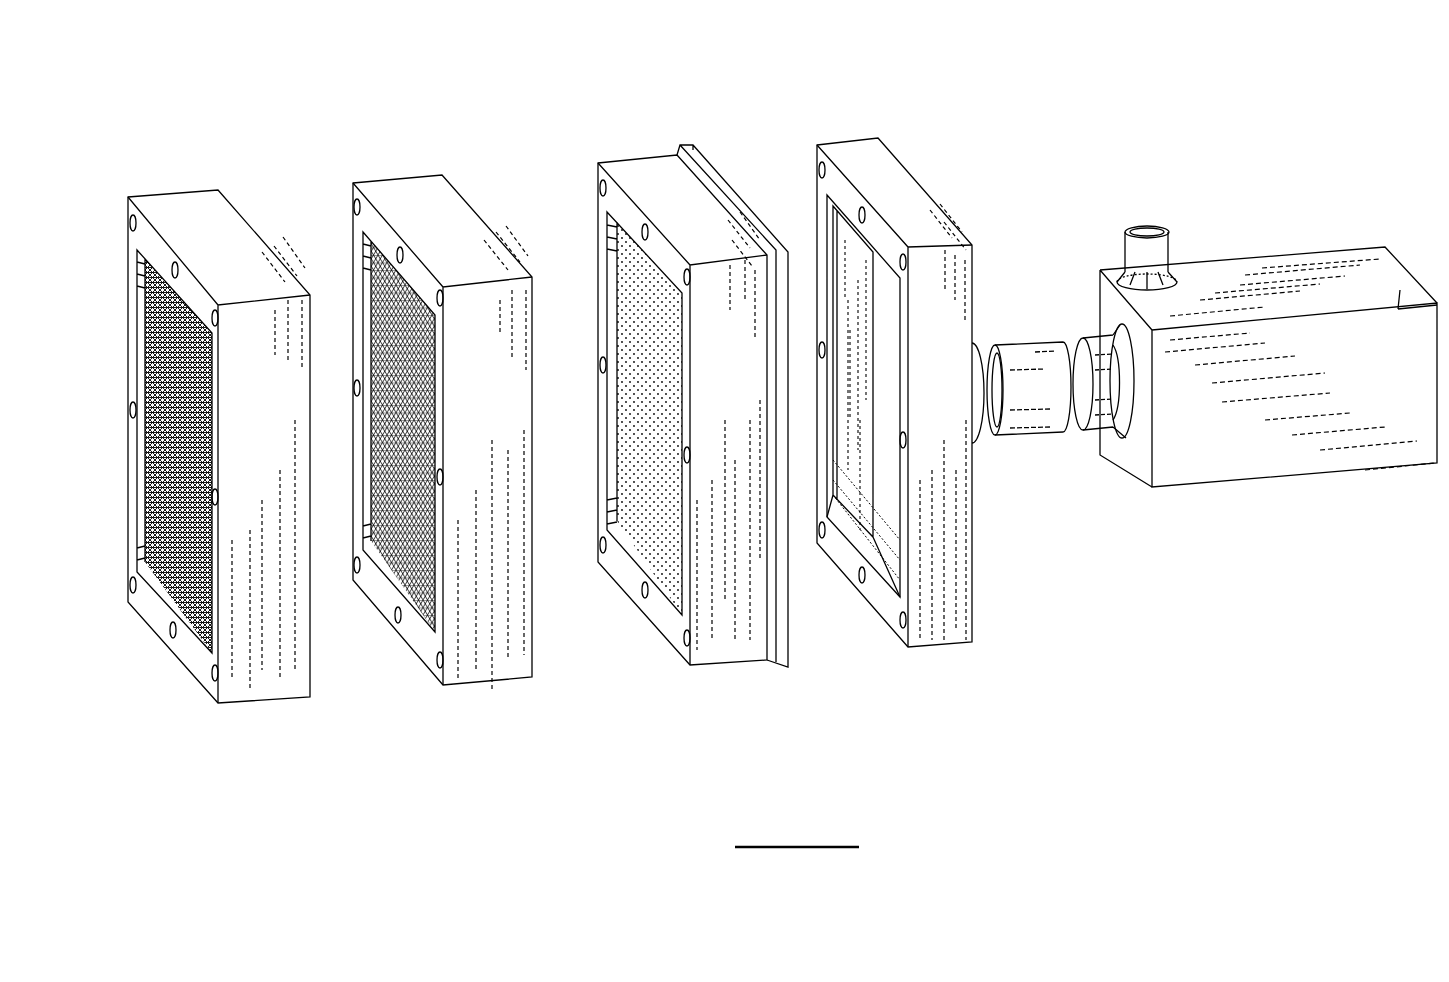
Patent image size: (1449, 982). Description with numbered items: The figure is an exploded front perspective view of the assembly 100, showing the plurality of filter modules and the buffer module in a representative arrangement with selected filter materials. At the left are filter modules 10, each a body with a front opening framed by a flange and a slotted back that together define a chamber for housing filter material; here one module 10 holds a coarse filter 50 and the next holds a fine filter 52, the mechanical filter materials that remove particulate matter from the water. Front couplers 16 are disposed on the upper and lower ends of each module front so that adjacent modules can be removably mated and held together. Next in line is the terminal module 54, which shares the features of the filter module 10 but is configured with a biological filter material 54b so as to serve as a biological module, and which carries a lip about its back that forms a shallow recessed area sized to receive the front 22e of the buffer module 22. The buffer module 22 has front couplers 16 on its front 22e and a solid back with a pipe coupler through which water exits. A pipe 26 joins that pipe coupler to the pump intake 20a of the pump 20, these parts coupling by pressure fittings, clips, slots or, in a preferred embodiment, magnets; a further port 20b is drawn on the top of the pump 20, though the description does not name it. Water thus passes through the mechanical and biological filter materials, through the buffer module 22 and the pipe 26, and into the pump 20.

The assembly 100 is at (521, 762).
The filter module 10 is at (468, 652).
The front couplers 16 is at (178, 268).
The coarse filter 50 is at (160, 403).
The fine filter 52 is at (380, 567).
The terminal module 54 is at (727, 632).
The biological filter material 54b is at (658, 532).
The buffer module 22 is at (952, 532).
The front 22e is at (853, 529).
The pipe 26 is at (1030, 343).
The pump 20 is at (1207, 425).
The pump intake 20a is at (1085, 393).
The tank outlet port 20b is at (1160, 230).